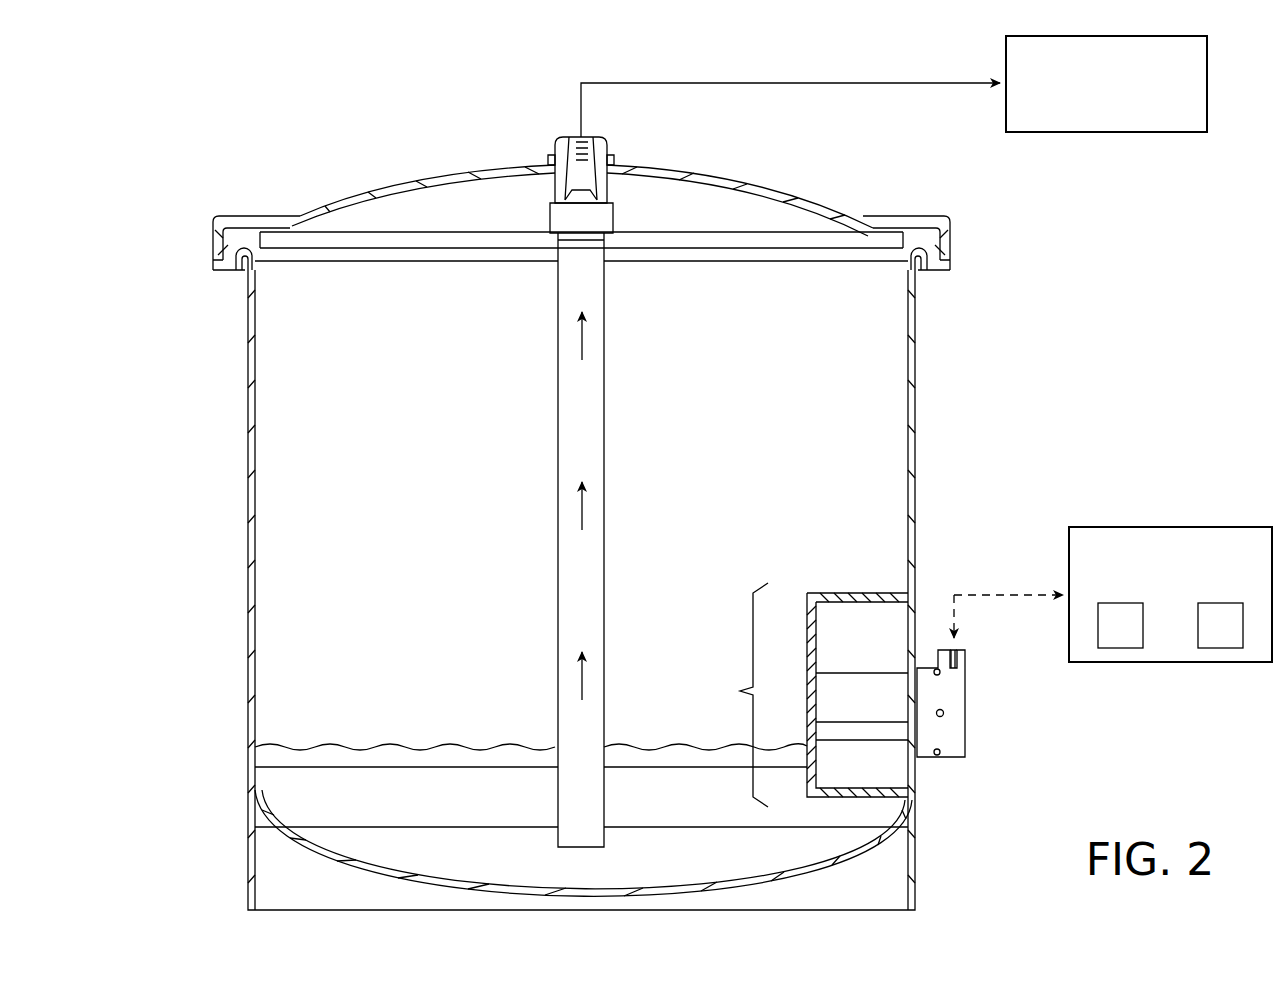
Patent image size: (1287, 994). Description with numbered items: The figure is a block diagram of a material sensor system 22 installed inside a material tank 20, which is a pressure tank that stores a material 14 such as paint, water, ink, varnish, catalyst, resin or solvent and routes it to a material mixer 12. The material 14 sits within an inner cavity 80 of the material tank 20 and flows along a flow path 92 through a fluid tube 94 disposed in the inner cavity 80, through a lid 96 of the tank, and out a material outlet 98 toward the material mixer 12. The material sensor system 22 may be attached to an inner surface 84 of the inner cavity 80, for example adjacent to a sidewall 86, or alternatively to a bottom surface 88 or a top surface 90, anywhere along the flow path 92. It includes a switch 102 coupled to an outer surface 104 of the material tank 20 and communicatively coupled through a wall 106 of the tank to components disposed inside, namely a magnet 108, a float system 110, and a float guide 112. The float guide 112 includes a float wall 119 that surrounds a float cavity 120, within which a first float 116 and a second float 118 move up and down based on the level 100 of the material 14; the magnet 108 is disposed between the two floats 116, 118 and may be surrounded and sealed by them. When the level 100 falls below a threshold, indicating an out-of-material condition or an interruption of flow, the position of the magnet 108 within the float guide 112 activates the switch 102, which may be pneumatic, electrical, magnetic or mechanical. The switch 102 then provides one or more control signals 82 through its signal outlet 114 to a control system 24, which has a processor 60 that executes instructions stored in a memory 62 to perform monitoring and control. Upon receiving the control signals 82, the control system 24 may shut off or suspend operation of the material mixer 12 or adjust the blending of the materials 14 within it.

The material mixer 12 is at (1207, 85).
The material 14 is at (578, 345).
The material tank 20 is at (170, 198).
The material sensor system 22 is at (735, 695).
The control system 24 is at (1172, 527).
The processor 60 is at (1120, 648).
The memory 62 is at (1222, 648).
The inner cavity 80 is at (623, 590).
The control signal 82 is at (963, 578).
The inner surface 84 is at (305, 279).
The sidewall 86 is at (912, 449).
The bottom surface 88 is at (440, 878).
The top surface 90 is at (705, 262).
The flow path 92 is at (583, 420).
The fluid tube 94 is at (604, 450).
The lid 96 is at (760, 180).
The material outlet 98 is at (558, 140).
The material level 100 is at (330, 745).
The switch 102 is at (965, 718).
The outer surface 104 is at (914, 485).
The wall 106 is at (912, 356).
The magnet 108 is at (888, 735).
The float system 110 is at (940, 802).
The float guide 112 is at (867, 581).
The signal outlet 114 is at (958, 655).
The first float 116 is at (862, 758).
The second float 118 is at (862, 697).
The float wall 119 is at (807, 690).
The float cavity 120 is at (844, 633).